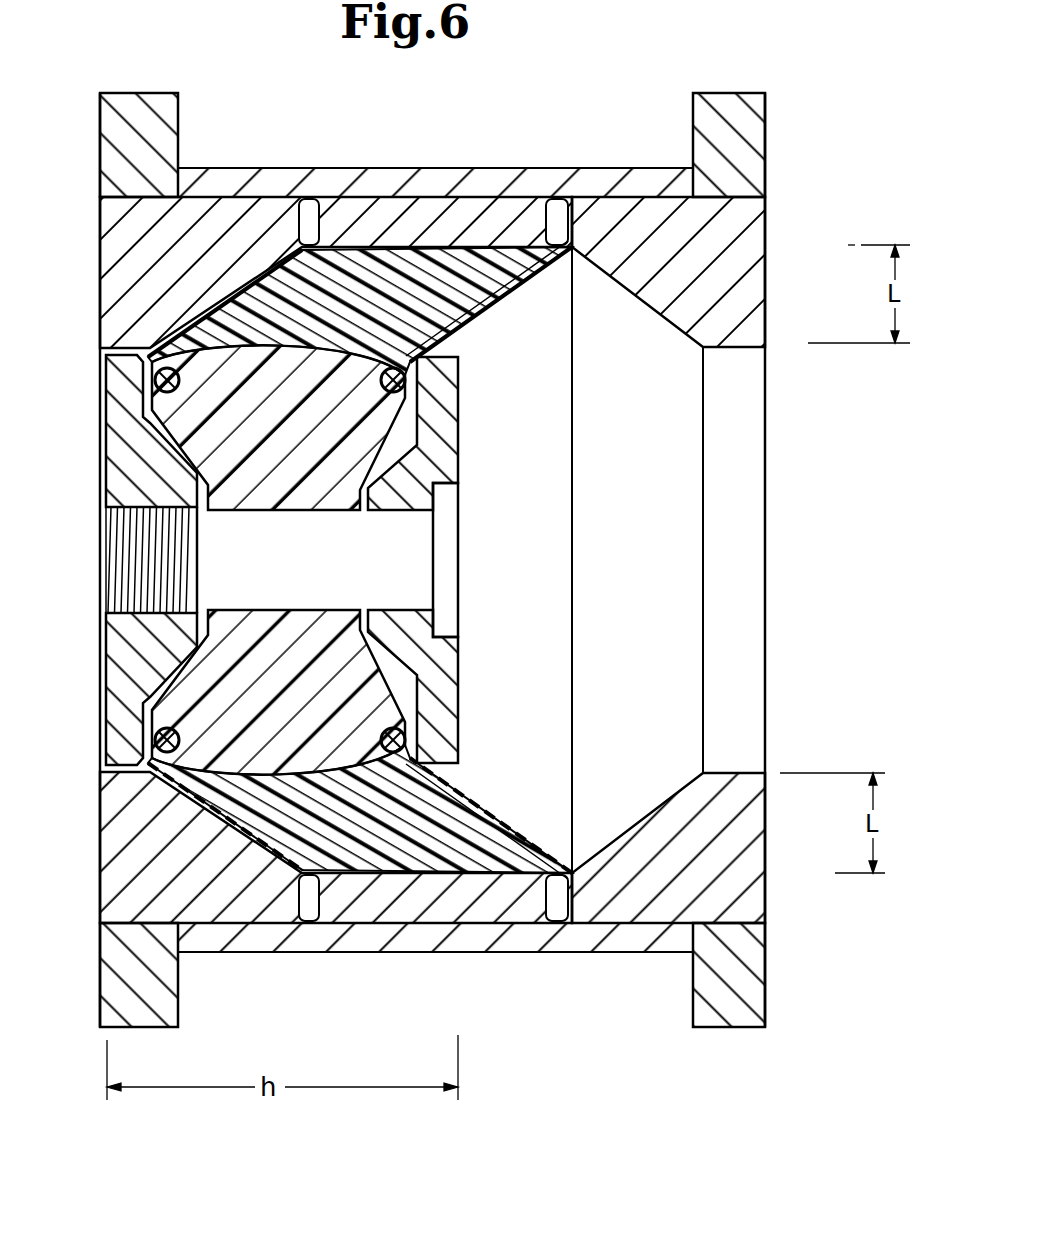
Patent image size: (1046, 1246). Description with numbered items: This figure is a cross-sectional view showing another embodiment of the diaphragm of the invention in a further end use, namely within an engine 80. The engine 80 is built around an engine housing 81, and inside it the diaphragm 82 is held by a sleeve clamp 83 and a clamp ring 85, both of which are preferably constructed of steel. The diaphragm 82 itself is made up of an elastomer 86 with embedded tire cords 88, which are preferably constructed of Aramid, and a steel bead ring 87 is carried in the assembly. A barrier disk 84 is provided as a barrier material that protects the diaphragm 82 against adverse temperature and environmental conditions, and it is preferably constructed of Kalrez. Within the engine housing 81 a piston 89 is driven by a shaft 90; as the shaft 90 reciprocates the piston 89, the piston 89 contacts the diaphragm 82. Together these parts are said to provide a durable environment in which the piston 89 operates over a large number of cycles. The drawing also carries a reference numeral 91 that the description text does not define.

The engine 80 is at (787, 99).
The engine housing 81 is at (100, 137).
The diaphragm 82 is at (263, 264).
The sleeve clamp 83 is at (107, 223).
The barrier disk 84 is at (477, 327).
The clamp ring 85 is at (117, 458).
The elastomer 86 is at (447, 262).
The steel bead ring 87 is at (160, 381).
The tire cords 88 is at (307, 370).
The piston 89 is at (462, 509).
The shaft 90 is at (122, 551).
The ring 91 is at (468, 200).